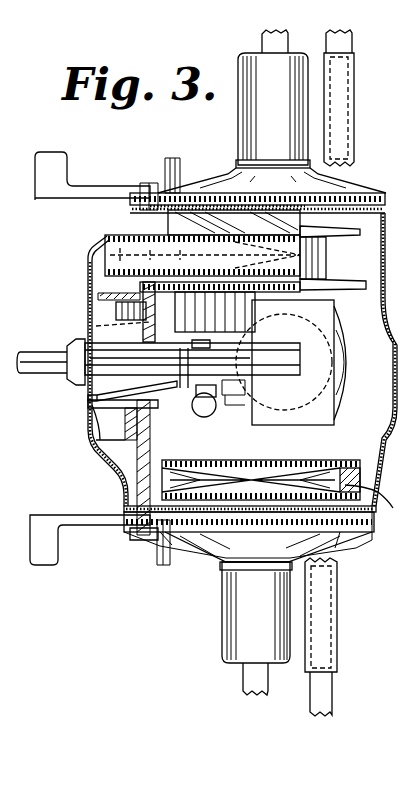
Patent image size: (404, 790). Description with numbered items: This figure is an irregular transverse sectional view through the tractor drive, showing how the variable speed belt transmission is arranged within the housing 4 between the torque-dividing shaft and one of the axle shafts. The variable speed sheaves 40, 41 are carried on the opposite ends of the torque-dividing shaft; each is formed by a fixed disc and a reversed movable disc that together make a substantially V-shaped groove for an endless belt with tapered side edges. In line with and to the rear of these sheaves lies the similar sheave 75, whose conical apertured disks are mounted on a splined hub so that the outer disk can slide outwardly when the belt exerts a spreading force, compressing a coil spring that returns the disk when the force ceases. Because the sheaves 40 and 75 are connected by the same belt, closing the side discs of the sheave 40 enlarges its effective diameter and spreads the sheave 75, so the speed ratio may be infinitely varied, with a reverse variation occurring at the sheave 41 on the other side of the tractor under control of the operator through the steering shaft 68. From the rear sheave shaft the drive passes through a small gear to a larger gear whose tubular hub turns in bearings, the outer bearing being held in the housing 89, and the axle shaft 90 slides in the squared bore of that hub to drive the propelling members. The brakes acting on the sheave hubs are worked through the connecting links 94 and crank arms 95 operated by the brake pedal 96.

The housing 4 is at (374, 504).
The variable speed sheave 40 is at (325, 460).
The variable speed sheave 41 is at (350, 288).
The steering shaft 68 is at (45, 360).
The sheave 75 is at (120, 233).
The housing 89 is at (252, 119).
The axle shaft 90 is at (284, 40).
The connecting link 94 is at (176, 398).
The crank arm 95 is at (118, 412).
The brake pedal 96 is at (48, 160).